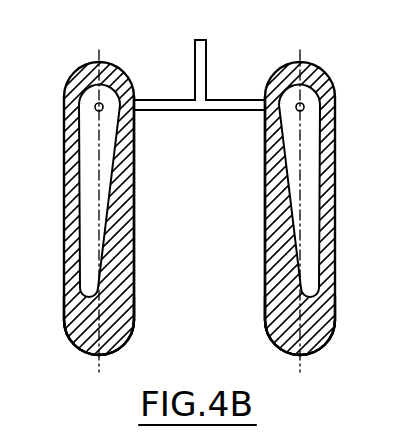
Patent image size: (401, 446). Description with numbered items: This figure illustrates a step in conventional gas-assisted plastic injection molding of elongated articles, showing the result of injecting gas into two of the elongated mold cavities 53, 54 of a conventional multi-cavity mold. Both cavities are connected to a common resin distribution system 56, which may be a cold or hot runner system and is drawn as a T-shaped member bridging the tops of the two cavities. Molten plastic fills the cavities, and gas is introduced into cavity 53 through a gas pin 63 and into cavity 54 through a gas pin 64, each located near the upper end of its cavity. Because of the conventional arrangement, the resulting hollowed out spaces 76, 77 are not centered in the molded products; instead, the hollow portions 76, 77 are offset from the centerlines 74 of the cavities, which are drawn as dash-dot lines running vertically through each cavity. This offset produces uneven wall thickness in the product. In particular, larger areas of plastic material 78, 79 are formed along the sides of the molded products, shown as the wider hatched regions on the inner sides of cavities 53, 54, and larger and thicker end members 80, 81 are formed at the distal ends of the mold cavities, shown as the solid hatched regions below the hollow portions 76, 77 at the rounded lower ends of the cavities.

The elongated mold cavity 53 is at (67, 250).
The elongated mold cavity 54 is at (333, 280).
The common resin distribution system 56 is at (201, 111).
The gas pin 63 is at (102, 104).
The gas pin 64 is at (303, 104).
The centerline 74 is at (102, 345).
The hollowed out space 76 is at (83, 180).
The hollowed out space 77 is at (315, 210).
The larger area of plastic material 78 is at (125, 231).
The larger area of plastic material 79 is at (272, 226).
The end member 80 is at (122, 323).
The end member 81 is at (272, 312).